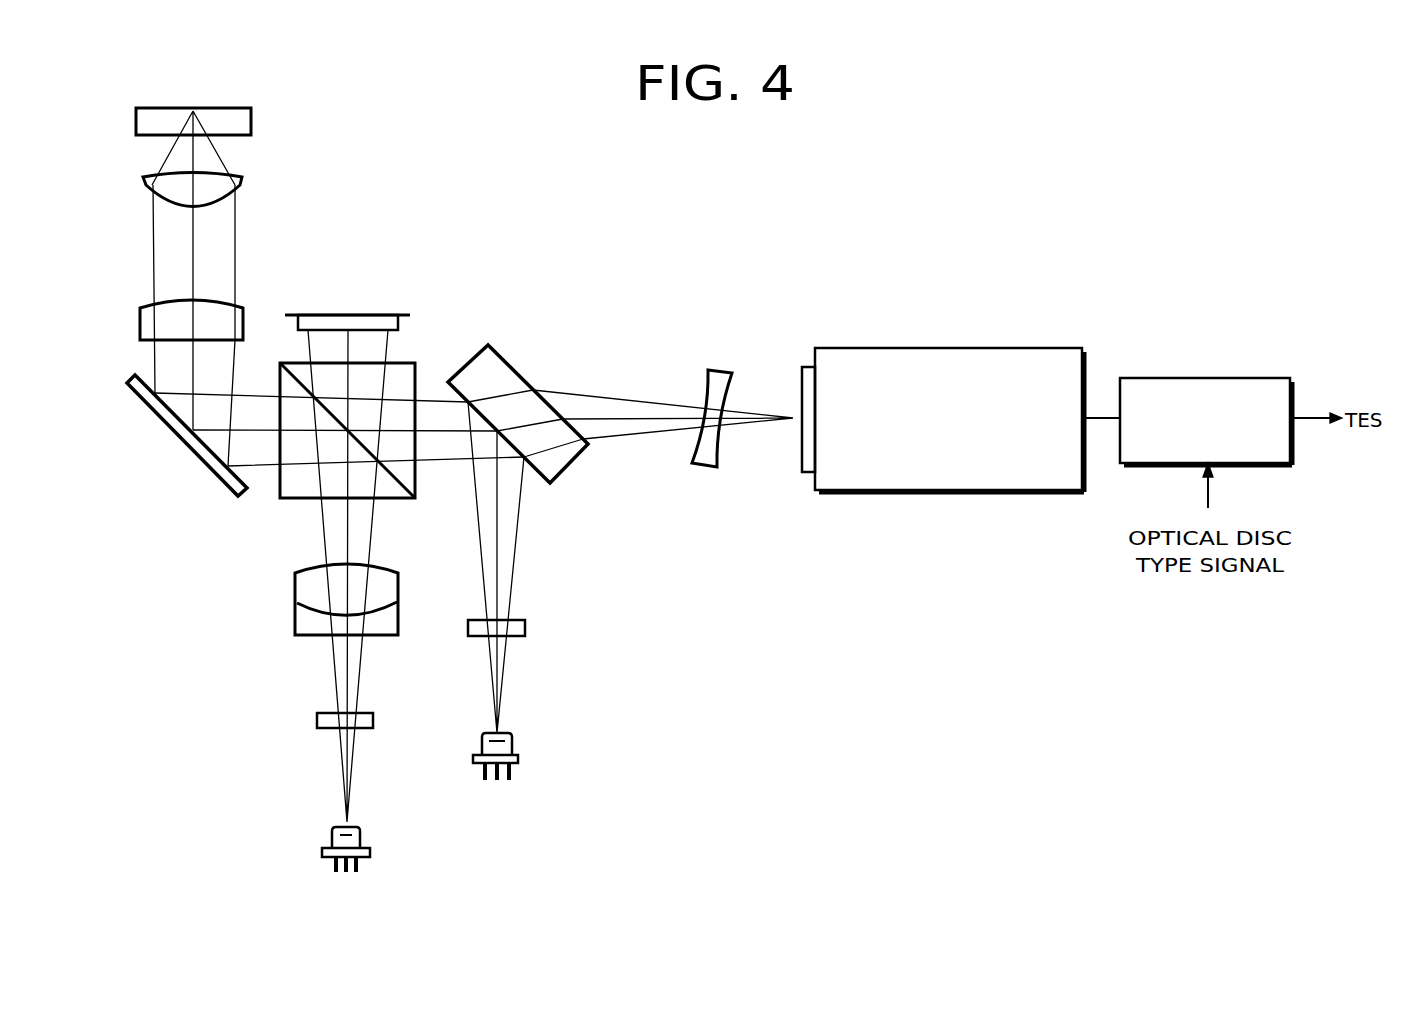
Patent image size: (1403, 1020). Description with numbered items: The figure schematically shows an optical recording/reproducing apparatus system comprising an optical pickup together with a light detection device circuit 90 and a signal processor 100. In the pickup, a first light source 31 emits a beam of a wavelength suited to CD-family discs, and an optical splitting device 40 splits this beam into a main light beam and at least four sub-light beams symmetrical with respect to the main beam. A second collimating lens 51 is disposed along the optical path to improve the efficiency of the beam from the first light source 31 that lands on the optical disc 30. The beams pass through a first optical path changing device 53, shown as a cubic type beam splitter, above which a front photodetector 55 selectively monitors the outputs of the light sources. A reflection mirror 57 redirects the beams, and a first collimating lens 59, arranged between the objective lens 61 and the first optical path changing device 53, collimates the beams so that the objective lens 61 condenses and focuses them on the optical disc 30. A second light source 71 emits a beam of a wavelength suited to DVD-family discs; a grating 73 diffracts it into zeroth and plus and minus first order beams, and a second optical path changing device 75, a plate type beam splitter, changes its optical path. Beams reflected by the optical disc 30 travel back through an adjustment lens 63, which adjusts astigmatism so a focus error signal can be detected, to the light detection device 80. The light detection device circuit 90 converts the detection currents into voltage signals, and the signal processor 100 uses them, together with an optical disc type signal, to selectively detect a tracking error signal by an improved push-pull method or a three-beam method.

The optical disc 30 is at (252, 120).
The objective lens 61 is at (242, 182).
The first collimating lens 59 is at (228, 300).
The reflection mirror 57 is at (187, 445).
The front photodetector 55 is at (372, 313).
The first optical path changing device 53 is at (420, 380).
The second optical path changing device 75 is at (508, 365).
The adjustment lens 63 is at (706, 378).
The light detection device 80 is at (802, 378).
The light detection device circuit 90 is at (936, 348).
The signal processor 100 is at (1216, 378).
The second collimating lens 51 is at (297, 602).
The optical splitting device 40 is at (317, 720).
The first light source 31 is at (330, 848).
The grating 73 is at (470, 622).
The second light source 71 is at (482, 748).